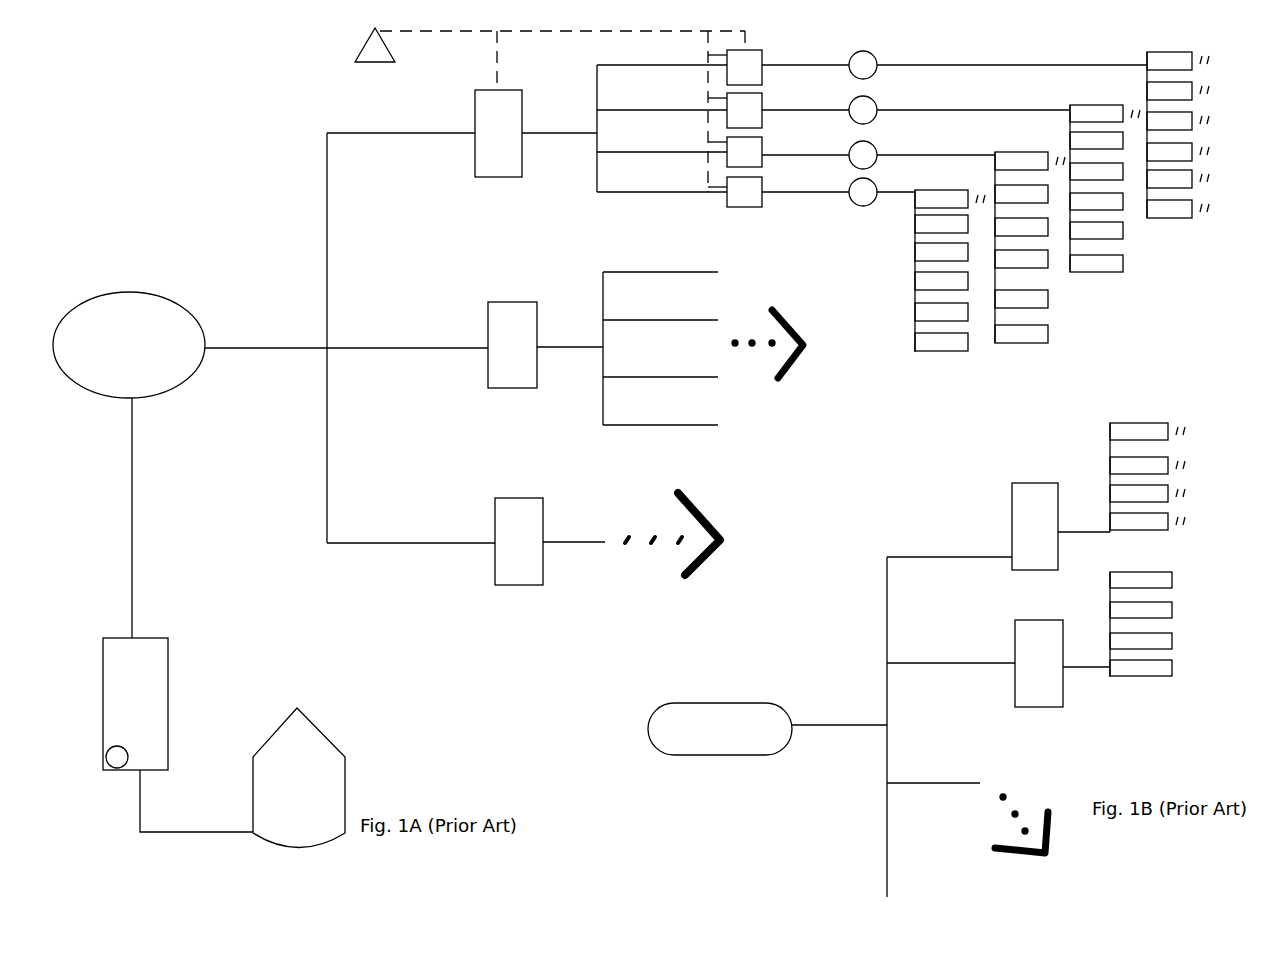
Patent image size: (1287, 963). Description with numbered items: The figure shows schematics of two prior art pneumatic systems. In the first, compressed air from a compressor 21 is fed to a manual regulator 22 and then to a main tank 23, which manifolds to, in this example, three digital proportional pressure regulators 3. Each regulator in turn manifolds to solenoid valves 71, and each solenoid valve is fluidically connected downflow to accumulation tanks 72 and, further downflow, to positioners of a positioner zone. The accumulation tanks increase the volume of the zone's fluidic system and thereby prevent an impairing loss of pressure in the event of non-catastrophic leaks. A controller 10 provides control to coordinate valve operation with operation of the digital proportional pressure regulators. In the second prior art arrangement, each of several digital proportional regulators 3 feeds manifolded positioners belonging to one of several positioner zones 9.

In FIG. 1A, the digital proportional pressure regulator 3 is at (509, 339).
In FIG. 1B, the digital proportional pressure regulator 3 is at (1037, 598).
In FIG. 1A, the positioner zone 9 is at (945, 372).
In FIG. 1B, the positioner zone 9 is at (1137, 417).
In FIG. 1A, the controller 10 is at (550, 110).
In FIG. 1A, the compressor 21 is at (299, 778).
In FIG. 1A, the manual regulator 22 is at (135, 704).
In FIG. 1A, the main tank 23 is at (129, 345).
In FIG. 1A, the solenoid valve 71 is at (744, 128).
In FIG. 1A, the accumulation tank 72 is at (954, 128).